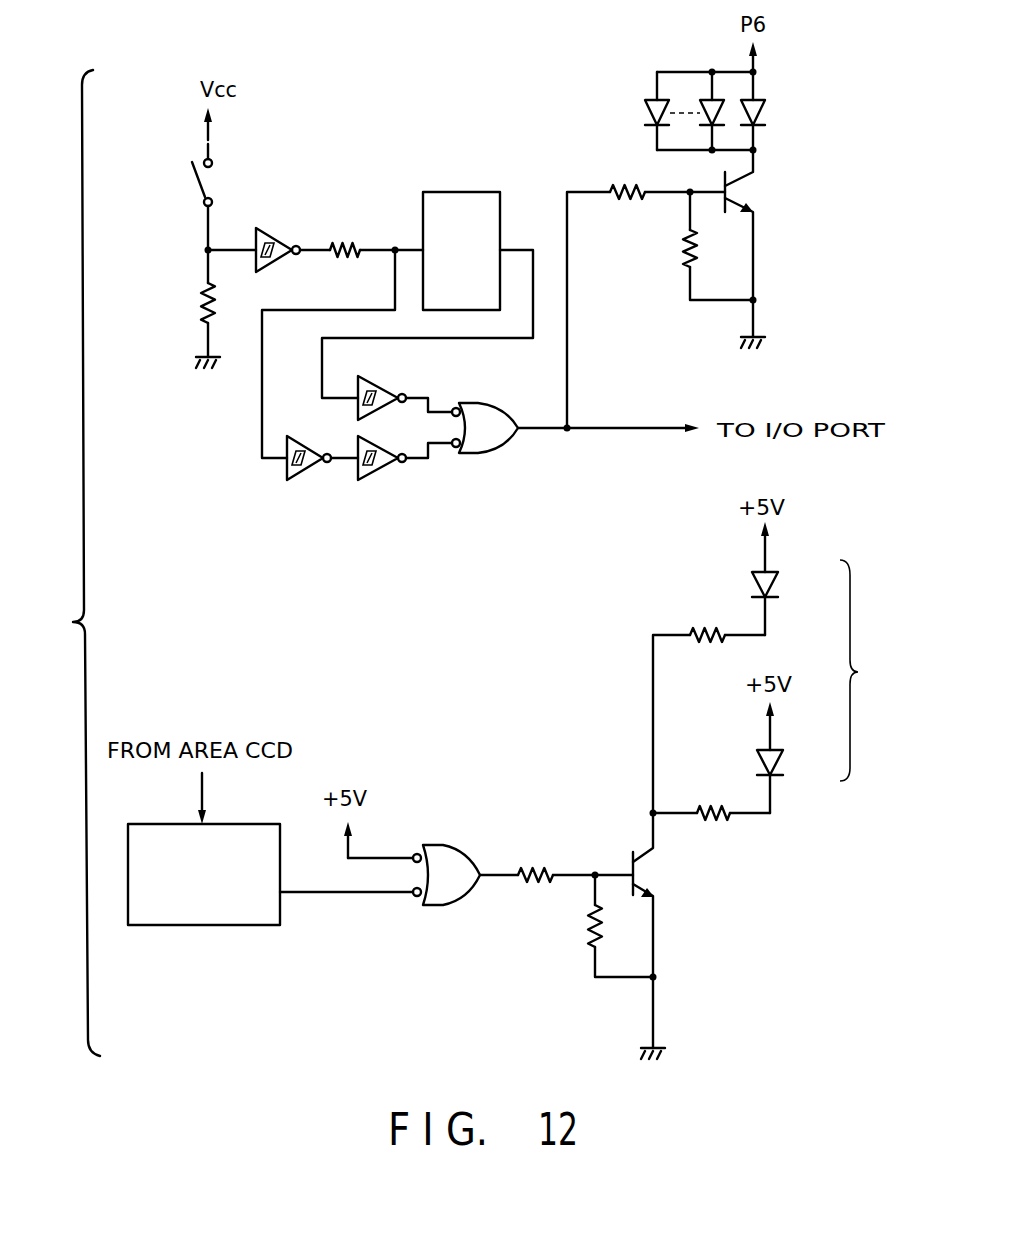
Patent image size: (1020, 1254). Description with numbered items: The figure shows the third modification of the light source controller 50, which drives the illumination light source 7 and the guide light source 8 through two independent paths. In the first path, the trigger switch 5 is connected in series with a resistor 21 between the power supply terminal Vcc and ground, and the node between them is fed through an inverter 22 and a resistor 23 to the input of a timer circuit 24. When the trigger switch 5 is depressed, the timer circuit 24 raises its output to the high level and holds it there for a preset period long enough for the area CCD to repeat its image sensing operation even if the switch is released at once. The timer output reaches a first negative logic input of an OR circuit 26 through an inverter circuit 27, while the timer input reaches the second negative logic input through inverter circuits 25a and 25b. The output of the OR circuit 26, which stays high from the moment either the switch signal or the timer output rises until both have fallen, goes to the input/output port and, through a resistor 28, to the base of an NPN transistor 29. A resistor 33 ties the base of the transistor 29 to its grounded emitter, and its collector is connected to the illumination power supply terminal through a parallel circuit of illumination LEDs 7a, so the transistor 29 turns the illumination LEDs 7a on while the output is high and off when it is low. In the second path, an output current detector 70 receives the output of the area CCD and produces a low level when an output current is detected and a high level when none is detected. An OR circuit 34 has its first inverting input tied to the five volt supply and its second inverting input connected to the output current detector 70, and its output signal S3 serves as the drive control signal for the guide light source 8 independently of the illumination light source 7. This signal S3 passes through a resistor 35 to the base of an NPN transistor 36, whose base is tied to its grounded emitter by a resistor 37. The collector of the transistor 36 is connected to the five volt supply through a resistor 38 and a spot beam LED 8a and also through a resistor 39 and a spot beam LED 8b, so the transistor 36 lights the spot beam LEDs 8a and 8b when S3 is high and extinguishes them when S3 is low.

The trigger switch 5 is at (210, 182).
The resistor 21 is at (199, 300).
The inverter 22 is at (285, 232).
The resistor 23 is at (343, 236).
The timer circuit 24 is at (453, 190).
The inverter circuit 25a is at (303, 478).
The inverter circuit 25b is at (380, 478).
The OR circuit 26 is at (483, 455).
The inverter circuit 27 is at (394, 360).
The resistor 28 is at (624, 180).
The NPN transistor 29 is at (748, 192).
The resistor 33 is at (677, 249).
The illumination light source 7 is at (688, 62).
The illumination LEDs 7a is at (772, 108).
The guide light source 8 is at (859, 670).
The spot beam LED 8a is at (780, 588).
The spot beam LED 8b is at (785, 764).
The resistor 38 is at (704, 629).
The resistor 39 is at (709, 808).
The OR circuit 34 is at (446, 848).
The resistor 35 is at (541, 857).
The NPN transistor 36 is at (650, 876).
The resistor 37 is at (584, 932).
The output current detector 70 is at (258, 823).
The light source controller 50 is at (67, 563).
The output signal S3 is at (500, 880).